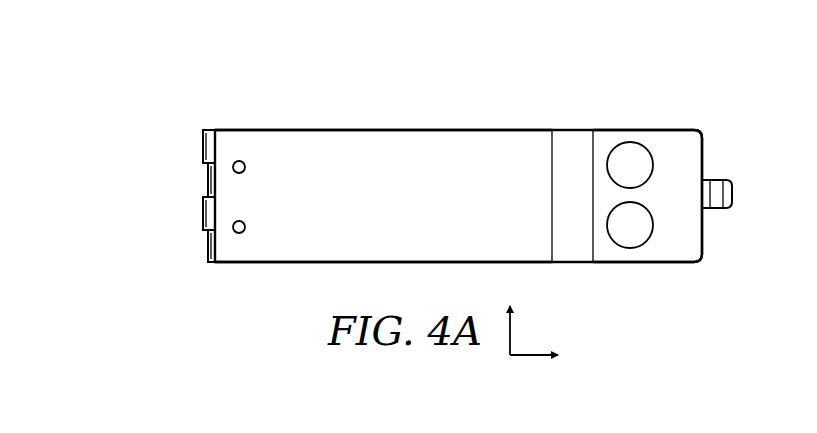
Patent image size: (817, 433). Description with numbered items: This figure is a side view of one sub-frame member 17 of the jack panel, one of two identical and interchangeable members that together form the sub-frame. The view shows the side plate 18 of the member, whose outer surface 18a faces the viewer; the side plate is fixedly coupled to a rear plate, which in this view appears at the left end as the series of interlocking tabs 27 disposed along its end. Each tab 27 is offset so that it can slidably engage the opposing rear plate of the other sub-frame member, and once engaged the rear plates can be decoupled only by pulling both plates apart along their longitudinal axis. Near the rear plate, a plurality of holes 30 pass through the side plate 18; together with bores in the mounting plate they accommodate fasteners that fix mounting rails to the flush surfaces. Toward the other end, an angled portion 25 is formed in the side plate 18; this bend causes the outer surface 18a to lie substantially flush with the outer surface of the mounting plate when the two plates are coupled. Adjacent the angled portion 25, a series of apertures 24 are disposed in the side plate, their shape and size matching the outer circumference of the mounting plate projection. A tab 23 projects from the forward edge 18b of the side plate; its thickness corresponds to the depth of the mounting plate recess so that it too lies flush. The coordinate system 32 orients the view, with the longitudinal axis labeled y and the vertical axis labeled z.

The sub-frame member 17 is at (494, 170).
The side plate 18 is at (496, 176).
The outer surface of side plate 18a is at (448, 200).
The forward edge of side plate 18b is at (704, 143).
The tab 23 is at (735, 203).
The apertures 24 is at (637, 150).
The angled portion 25 is at (573, 145).
The interlocking tabs 27 is at (207, 128).
The holes 30 is at (245, 169).
The coordinate system 32 is at (515, 346).